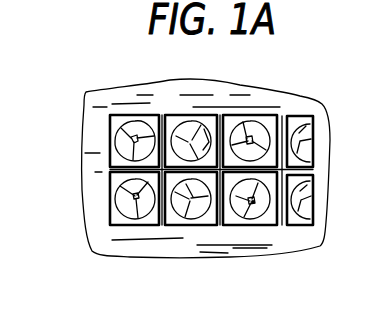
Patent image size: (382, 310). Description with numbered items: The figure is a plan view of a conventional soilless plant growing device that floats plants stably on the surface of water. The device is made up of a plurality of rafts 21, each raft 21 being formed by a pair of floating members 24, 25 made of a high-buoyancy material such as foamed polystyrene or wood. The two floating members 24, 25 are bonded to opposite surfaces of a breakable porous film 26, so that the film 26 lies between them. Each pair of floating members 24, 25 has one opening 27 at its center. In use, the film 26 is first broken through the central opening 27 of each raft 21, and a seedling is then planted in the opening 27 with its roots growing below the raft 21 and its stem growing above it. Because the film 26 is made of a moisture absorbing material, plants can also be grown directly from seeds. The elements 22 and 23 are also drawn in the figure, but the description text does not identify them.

The matrix material 21 is at (207, 110).
The abrasive grain 22 is at (183, 132).
The outer body 23 is at (92, 125).
The frame 24 is at (108, 193).
The partition 25 is at (110, 217).
The groove 26 is at (162, 222).
The crack 27 is at (259, 149).